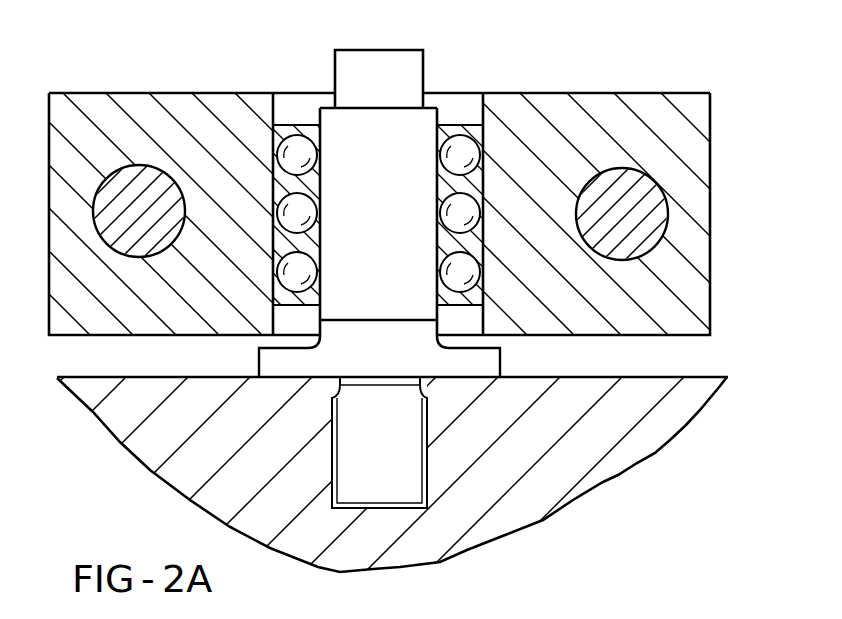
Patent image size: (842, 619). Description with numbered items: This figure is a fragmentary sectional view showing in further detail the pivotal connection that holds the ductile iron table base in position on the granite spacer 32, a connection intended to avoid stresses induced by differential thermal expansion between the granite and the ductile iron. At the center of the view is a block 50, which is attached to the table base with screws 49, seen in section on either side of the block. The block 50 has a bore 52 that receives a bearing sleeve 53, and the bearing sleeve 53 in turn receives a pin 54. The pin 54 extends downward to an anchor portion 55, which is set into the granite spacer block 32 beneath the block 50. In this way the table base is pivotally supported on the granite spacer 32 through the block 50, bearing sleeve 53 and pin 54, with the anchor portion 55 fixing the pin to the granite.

The granite spacer 32 is at (680, 377).
The screws 49 is at (137, 166).
The block 50 is at (592, 93).
The bore 52 is at (318, 128).
The bearing sleeve 53 is at (453, 122).
The pin 54 is at (448, 28).
The anchor portion 55 is at (503, 360).